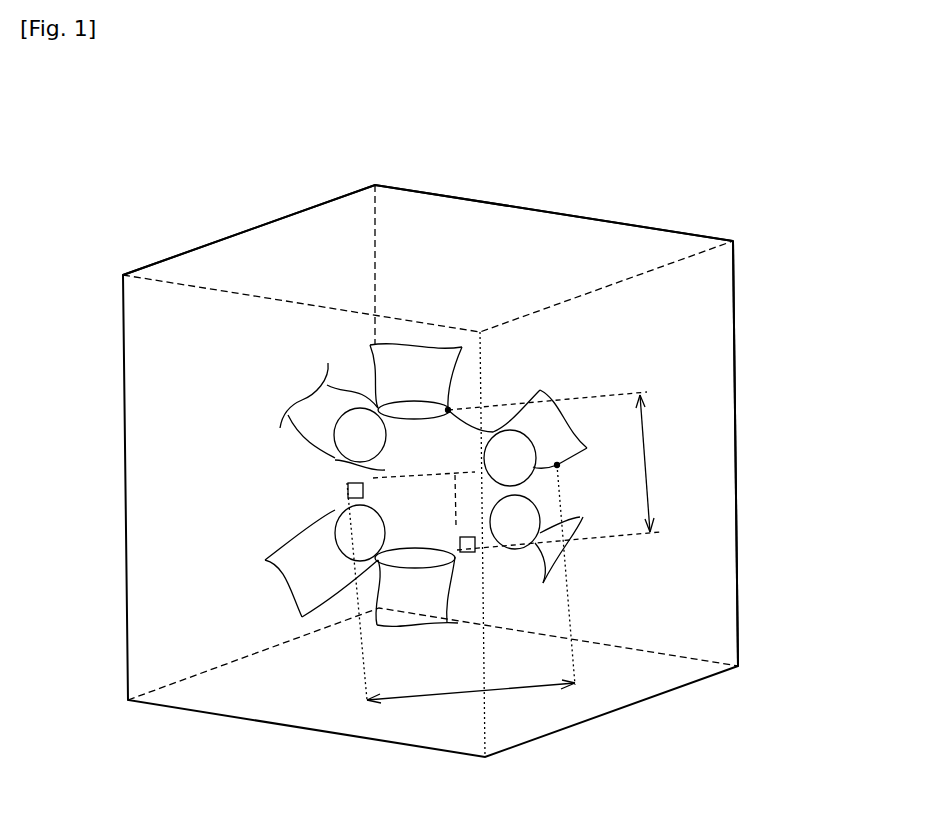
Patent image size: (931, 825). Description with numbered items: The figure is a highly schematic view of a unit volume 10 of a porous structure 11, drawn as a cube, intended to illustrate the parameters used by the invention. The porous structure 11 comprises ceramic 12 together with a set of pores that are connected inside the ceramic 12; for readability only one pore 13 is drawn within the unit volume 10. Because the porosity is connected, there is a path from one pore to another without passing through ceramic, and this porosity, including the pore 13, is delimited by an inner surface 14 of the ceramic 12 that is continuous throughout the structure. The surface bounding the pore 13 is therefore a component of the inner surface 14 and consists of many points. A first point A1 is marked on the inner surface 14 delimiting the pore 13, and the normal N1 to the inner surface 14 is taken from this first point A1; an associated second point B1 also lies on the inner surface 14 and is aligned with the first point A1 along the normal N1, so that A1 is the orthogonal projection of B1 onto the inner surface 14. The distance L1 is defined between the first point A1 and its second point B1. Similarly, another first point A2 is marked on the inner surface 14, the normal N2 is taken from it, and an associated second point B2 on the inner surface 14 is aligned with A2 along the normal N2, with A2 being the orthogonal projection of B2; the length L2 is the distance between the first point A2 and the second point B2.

The unit volume 10 is at (733, 272).
The porous structure 11 is at (627, 212).
The ceramic 12 is at (700, 366).
The pore 13 is at (335, 460).
The inner surface 14 is at (412, 563).
The normal N1 is at (455, 470).
The normal N2 is at (415, 482).
The first point A1 is at (462, 552).
The first point A2 is at (347, 488).
The second point B1 is at (448, 410).
The second point B2 is at (557, 465).
The distance L1 is at (571, 471).
The length L2 is at (461, 584).